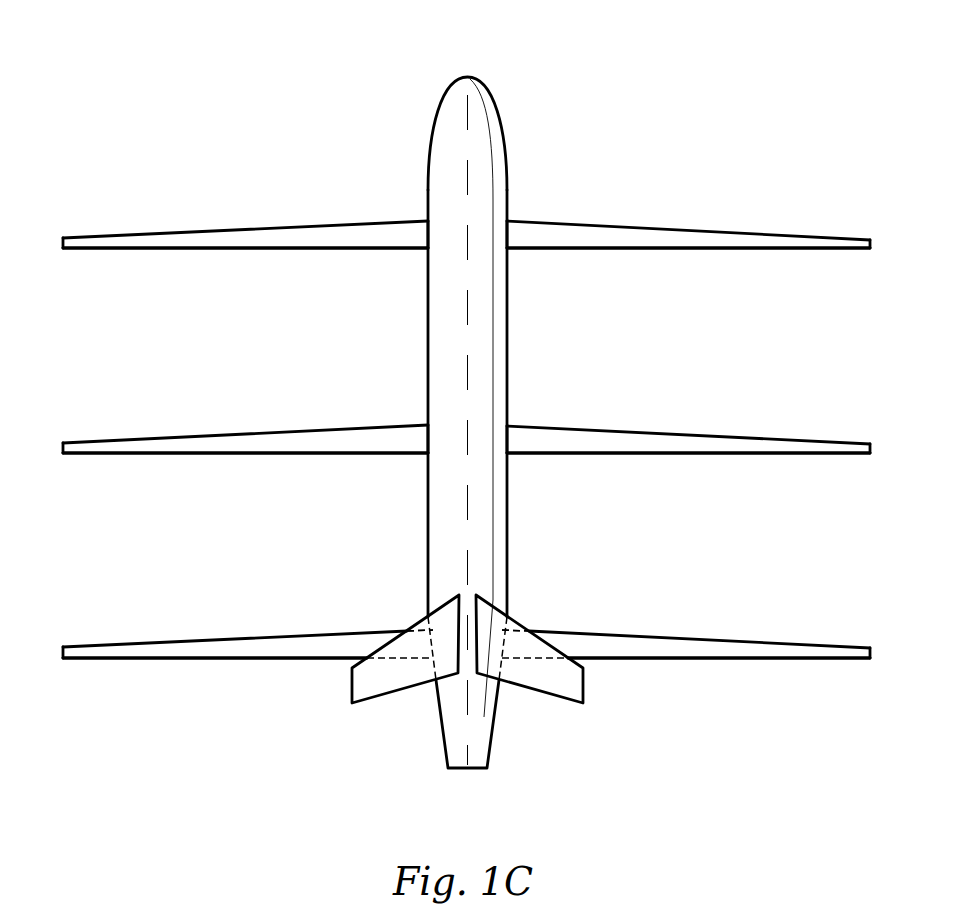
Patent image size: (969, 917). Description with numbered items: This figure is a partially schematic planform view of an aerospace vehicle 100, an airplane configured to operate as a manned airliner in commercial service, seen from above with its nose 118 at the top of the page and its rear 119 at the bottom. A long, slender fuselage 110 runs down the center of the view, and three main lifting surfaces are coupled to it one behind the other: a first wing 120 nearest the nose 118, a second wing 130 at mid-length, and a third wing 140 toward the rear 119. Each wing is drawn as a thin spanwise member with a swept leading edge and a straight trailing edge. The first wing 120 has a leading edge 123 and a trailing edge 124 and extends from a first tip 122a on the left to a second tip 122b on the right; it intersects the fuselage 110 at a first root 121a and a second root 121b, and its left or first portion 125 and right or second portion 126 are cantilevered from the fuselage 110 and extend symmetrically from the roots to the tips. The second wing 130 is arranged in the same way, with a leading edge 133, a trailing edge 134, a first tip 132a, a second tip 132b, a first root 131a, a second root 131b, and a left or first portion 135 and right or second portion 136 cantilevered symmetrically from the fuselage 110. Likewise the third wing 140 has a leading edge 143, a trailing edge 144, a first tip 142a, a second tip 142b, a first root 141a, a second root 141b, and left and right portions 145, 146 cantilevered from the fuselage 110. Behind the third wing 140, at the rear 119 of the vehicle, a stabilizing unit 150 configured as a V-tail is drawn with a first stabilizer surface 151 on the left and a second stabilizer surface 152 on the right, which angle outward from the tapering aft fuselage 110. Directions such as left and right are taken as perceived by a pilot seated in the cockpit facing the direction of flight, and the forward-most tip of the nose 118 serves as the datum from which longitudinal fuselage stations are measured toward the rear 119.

The aerospace vehicle 100 is at (321, 104).
The fuselage 110 is at (435, 123).
The nose 118 is at (472, 70).
The rear 119 is at (473, 777).
The first wing 120 is at (257, 236).
The first root of the first wing 121a is at (425, 232).
The second root of the first wing 121b is at (507, 230).
The first tip of the first wing 122a is at (63, 240).
The second tip of the first wing 122b is at (872, 242).
The leading edge 123 is at (172, 232).
The trailing edge 124 is at (290, 248).
The first portion of the first wing 125 is at (215, 240).
The second portion of the first wing 126 is at (648, 240).
The second wing 130 is at (280, 444).
The first root of the second wing 131a is at (427, 440).
The second root of the second wing 131b is at (507, 438).
The first tip of the second wing 132a is at (62, 447).
The second tip of the second wing 132b is at (872, 448).
The leading edge 133 is at (152, 438).
The trailing edge 134 is at (312, 453).
The first portion of the second wing 135 is at (243, 445).
The second portion of the second wing 136 is at (640, 443).
The third wing 140 is at (280, 647).
The first root of the third wing 141a is at (432, 647).
The second root of the third wing 141b is at (503, 648).
The first tip of the third wing 142a is at (62, 652).
The second tip of the third wing 142b is at (872, 657).
The leading edge 143 is at (165, 642).
The trailing edge 144 is at (255, 660).
The first portion of the third wing 145 is at (222, 652).
The second portion of the third wing 146 is at (673, 650).
The stabilizing unit 150 is at (519, 697).
The first stabilizer surface 151 is at (372, 702).
The second stabilizer surface 152 is at (552, 700).